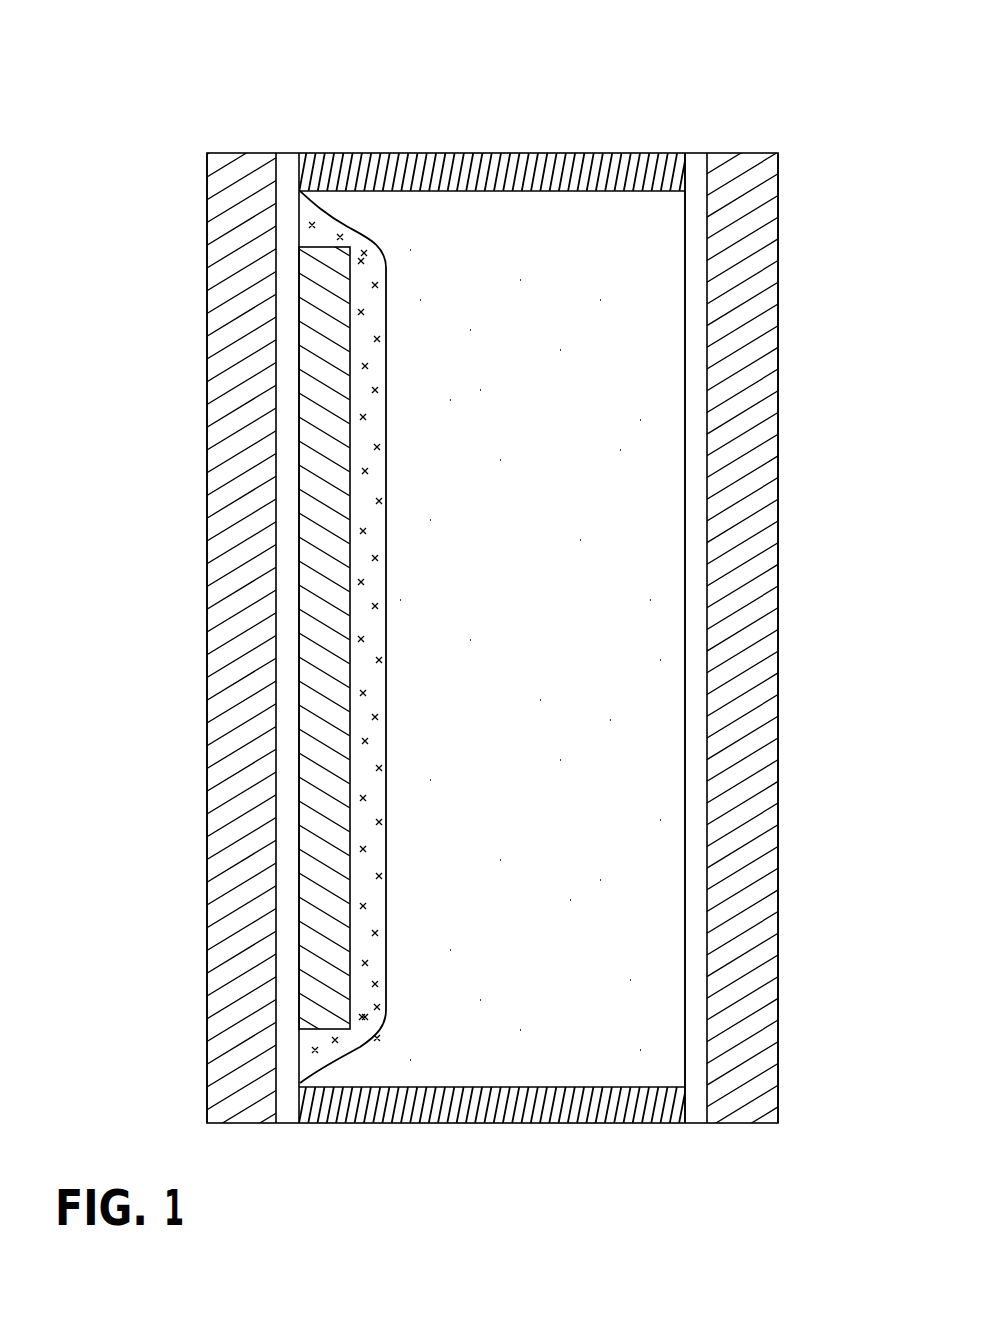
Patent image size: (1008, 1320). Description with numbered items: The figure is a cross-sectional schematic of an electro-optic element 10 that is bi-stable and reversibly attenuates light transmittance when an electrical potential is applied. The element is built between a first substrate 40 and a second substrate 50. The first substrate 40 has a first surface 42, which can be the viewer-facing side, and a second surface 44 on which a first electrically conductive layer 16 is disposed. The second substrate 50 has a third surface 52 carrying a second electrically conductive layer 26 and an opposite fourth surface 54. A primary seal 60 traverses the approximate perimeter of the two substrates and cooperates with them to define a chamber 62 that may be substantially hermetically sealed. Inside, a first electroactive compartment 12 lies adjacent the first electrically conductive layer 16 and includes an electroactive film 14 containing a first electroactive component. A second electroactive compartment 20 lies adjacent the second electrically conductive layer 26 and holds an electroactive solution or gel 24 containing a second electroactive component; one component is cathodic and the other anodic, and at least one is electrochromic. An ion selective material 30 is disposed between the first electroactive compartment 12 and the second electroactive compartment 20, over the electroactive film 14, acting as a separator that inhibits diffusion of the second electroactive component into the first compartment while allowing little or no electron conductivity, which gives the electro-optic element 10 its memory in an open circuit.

The electro-optic element 10 is at (240, 110).
The first electroactive compartment 12 is at (290, 853).
The electroactive film 14 is at (333, 525).
The first electrically conductive layer 16 is at (290, 390).
The second electroactive compartment 20 is at (696, 802).
The electroactive solution or gel 24 is at (625, 635).
The second electrically conductive layer 26 is at (695, 423).
The ion selective material 30 is at (367, 673).
The first substrate 40 is at (242, 277).
The first surface 42 is at (206, 208).
The second surface 44 is at (278, 217).
The second substrate 50 is at (735, 368).
The third surface 52 is at (705, 246).
The fourth surface 54 is at (780, 228).
The primary seal 60 is at (550, 153).
The chamber 62 is at (481, 250).